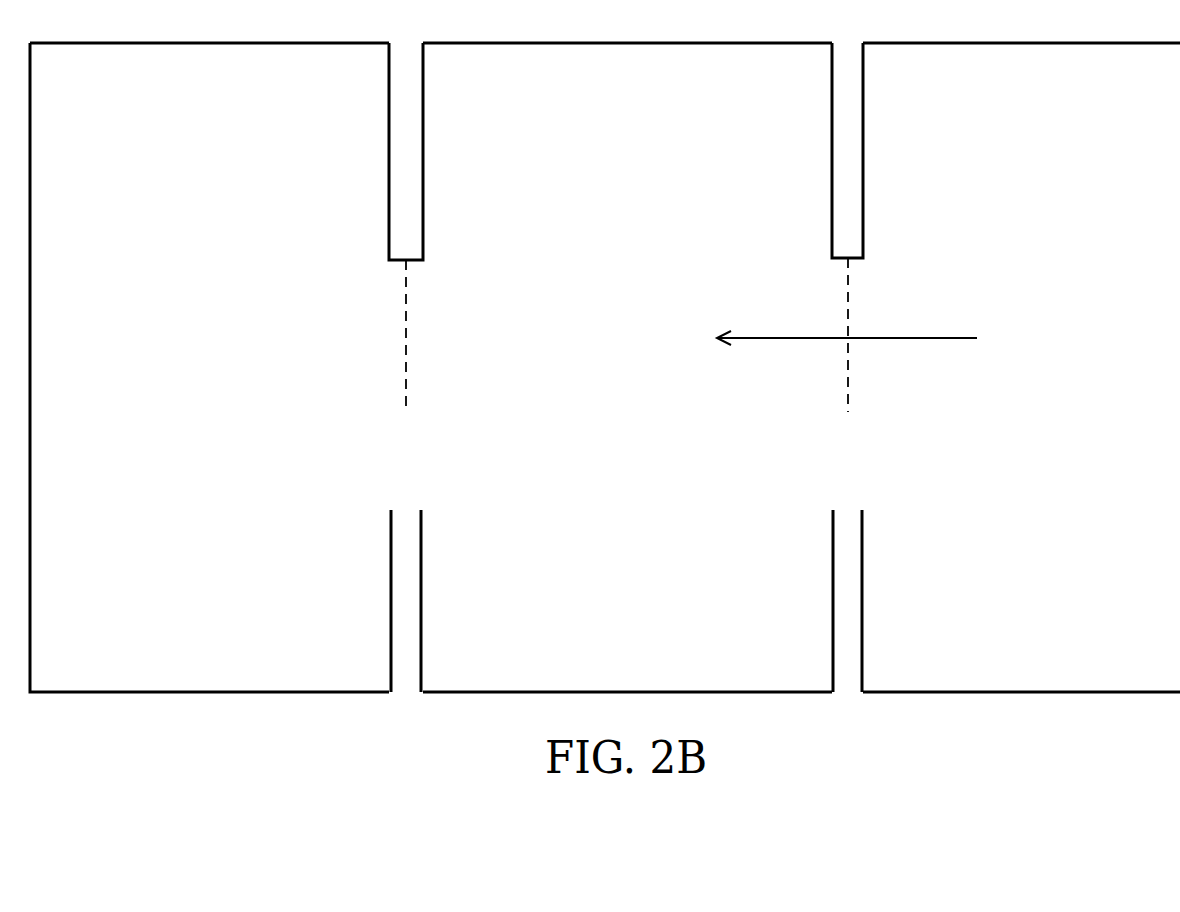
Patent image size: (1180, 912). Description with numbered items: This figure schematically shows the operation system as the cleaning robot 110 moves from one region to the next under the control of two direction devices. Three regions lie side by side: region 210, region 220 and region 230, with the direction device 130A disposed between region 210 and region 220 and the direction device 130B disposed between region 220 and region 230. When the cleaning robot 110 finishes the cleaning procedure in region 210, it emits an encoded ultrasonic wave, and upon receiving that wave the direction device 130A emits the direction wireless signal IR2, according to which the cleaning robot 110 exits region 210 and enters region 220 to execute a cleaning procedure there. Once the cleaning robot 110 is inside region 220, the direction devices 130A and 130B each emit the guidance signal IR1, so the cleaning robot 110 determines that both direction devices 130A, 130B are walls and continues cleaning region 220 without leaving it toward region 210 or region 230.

The cleaning robot 110 is at (1053, 353).
The direction device 130A is at (883, 479).
The direction device 130B is at (441, 479).
The region 210 is at (1067, 641).
The region 220 is at (652, 641).
The region 230 is at (236, 642).
The direction wireless signal IR1 is at (406, 334).
The direction wireless signal IR2 is at (848, 386).